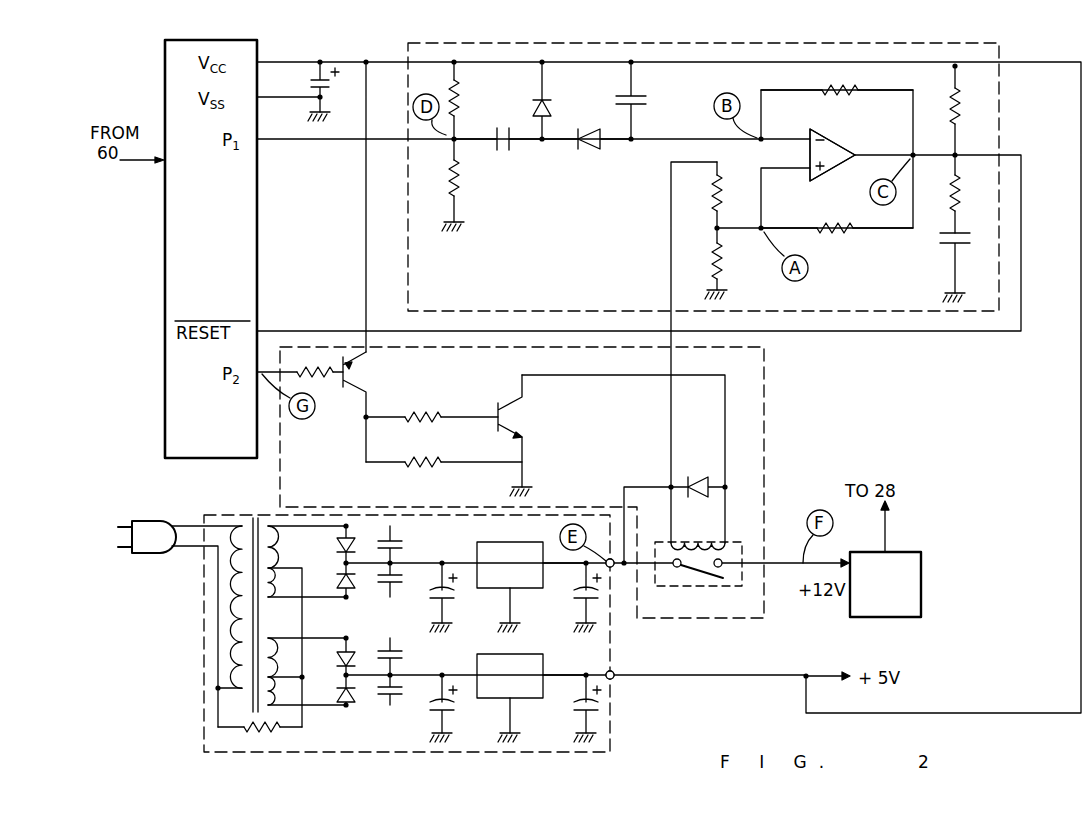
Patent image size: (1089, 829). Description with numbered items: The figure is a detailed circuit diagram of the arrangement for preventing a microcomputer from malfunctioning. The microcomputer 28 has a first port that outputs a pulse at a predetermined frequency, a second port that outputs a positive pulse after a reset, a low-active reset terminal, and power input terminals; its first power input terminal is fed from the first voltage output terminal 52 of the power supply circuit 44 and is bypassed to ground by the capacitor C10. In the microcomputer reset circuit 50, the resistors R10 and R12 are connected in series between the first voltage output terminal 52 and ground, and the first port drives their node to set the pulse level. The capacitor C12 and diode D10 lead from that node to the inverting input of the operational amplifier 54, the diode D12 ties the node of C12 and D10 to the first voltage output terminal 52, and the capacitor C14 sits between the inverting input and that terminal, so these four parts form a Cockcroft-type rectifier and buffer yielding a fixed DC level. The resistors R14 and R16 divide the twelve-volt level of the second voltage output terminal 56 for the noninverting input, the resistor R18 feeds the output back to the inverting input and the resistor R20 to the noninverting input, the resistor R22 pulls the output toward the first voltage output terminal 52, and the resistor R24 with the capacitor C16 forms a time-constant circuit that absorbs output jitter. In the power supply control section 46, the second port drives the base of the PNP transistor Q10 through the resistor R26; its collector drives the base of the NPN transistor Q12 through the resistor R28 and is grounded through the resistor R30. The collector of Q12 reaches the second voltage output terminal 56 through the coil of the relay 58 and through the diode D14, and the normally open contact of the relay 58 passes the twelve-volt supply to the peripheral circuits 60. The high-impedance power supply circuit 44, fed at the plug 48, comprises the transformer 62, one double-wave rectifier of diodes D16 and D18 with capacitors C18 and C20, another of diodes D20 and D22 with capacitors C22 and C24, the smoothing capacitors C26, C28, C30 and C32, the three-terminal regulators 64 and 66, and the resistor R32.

The microcomputer 28 is at (165, 250).
The microcomputer reset circuit 50 is at (999, 107).
The power supply control section 46 is at (764, 437).
The power supply circuit 44 is at (610, 735).
The AC plug 48 is at (142, 554).
The transformer 62 is at (270, 612).
The three-terminal regulator 64 is at (534, 588).
The three-terminal regulator 66 is at (534, 698).
The operational amplifier 54 is at (836, 172).
The second voltage output terminal 56 is at (612, 567).
The first voltage output terminal 52 is at (614, 674).
The relay 58 is at (741, 541).
The peripheral circuits 60 is at (921, 574).
The capacitor C10 is at (304, 82).
The resistor R10 is at (468, 98).
The resistor R12 is at (460, 172).
The capacitor C12 is at (516, 141).
The diode D12 is at (550, 100).
The diode D10 is at (586, 146).
The capacitor C14 is at (633, 100).
The resistor R14 is at (724, 186).
The resistor R16 is at (725, 263).
The resistor R18 is at (856, 90).
The resistor R20 is at (839, 230).
The resistor R22 is at (960, 124).
The resistor R24 is at (947, 199).
The capacitor C16 is at (946, 246).
The PNP transistor Q10 is at (363, 370).
The NPN emitter-grounded transistor Q12 is at (526, 418).
The resistor R26 is at (318, 382).
The resistor R28 is at (424, 410).
The resistor R30 is at (422, 464).
The diode D14 is at (698, 477).
The diode D16 is at (335, 543).
The diode D18 is at (354, 584).
The diode D20 is at (336, 666).
The diode D22 is at (354, 697).
The resistor R32 is at (268, 734).
The capacitor C18 is at (401, 544).
The capacitor C20 is at (402, 584).
The capacitor C22 is at (401, 655).
The capacitor C24 is at (408, 692).
The smoothing capacitor C26 is at (458, 596).
The smoothing capacitor C28 is at (458, 702).
The smoothing capacitor C30 is at (576, 596).
The smoothing capacitor C32 is at (606, 704).